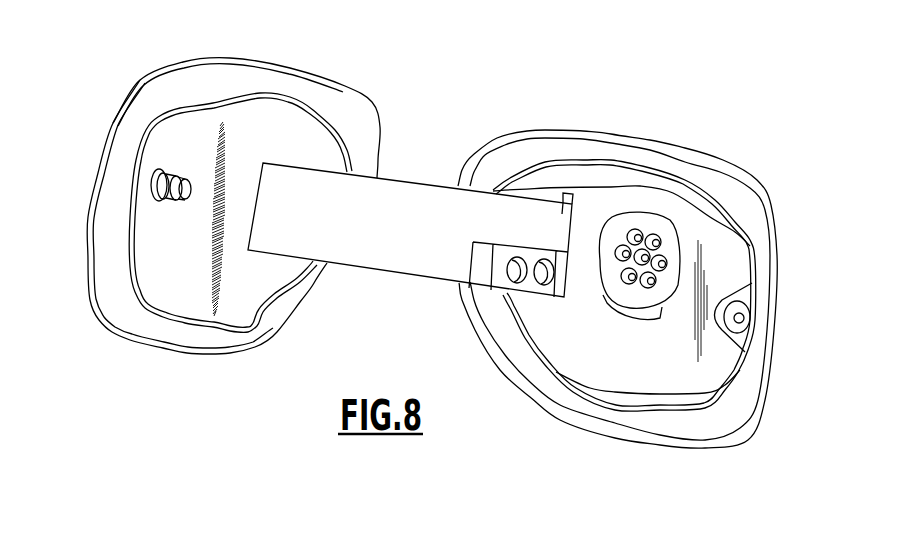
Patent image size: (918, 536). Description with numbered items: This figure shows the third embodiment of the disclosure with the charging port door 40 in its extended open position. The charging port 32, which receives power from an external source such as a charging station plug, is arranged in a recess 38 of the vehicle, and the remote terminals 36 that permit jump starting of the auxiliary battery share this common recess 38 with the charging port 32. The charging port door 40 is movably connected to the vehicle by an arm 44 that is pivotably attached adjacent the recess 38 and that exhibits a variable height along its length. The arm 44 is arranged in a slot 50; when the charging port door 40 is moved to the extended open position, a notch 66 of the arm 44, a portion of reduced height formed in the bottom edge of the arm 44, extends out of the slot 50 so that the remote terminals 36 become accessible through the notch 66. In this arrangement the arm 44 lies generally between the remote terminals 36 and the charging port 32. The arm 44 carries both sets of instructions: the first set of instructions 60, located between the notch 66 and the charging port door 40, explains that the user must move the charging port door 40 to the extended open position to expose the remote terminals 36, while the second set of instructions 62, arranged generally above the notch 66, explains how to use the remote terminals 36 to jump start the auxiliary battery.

The charging port door 40 is at (110, 150).
The recess 38 is at (735, 262).
The arm 44 is at (410, 217).
The first set of instructions 60 is at (343, 234).
The second set of instructions 62 is at (513, 208).
The notch 66 is at (488, 316).
The remote terminals 36 is at (527, 288).
The slot 50 is at (563, 265).
The charging port 32 is at (678, 237).